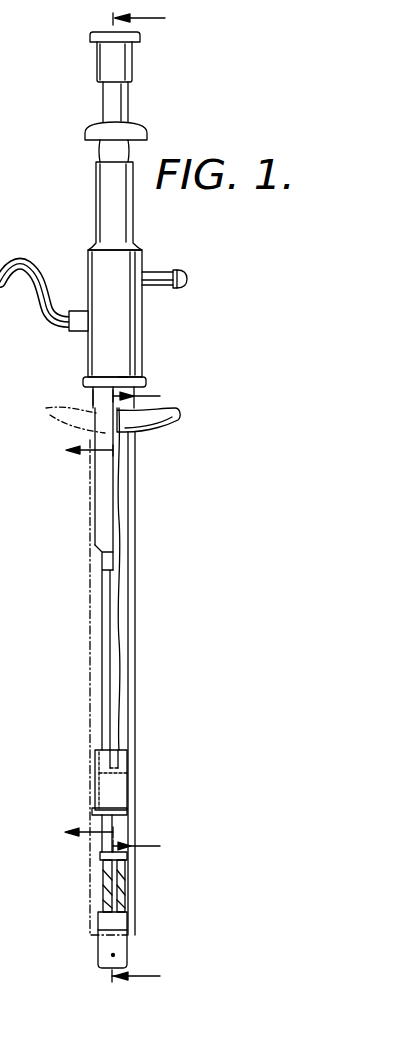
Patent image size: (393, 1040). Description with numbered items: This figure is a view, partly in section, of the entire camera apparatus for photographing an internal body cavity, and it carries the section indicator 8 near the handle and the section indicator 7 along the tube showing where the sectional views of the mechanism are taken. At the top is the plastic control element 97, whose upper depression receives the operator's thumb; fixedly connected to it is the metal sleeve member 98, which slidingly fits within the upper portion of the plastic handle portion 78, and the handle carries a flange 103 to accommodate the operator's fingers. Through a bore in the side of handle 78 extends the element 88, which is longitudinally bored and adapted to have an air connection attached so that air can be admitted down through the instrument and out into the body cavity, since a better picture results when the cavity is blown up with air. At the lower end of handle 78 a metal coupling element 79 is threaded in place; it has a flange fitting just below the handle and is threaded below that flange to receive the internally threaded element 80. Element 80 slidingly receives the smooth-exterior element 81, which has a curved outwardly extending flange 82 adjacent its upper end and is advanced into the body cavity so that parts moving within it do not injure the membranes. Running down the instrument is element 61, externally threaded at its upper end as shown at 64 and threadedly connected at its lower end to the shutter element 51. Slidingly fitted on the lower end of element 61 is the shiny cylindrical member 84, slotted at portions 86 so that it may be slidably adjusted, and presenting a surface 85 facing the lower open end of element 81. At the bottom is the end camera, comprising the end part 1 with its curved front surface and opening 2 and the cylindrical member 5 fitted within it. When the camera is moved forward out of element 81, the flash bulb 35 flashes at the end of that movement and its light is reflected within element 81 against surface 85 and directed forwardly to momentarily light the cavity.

The end part 1 is at (98, 958).
The opening 2 is at (149, 915).
The cylindrical member 5 is at (122, 940).
The section line 7- 7 is at (78, 685).
The section line 8- 8 is at (151, 204).
The flash bulb 35 is at (120, 882).
The shutter element 51 is at (108, 895).
The element 61 is at (113, 822).
The external thread 64 is at (108, 560).
The handle portion 78 is at (93, 268).
The metal coupling element 79 is at (123, 377).
The element 80 is at (90, 396).
The element 81 is at (125, 612).
The curved outwardly extending flange 82 is at (163, 422).
The cylindrical member 84 is at (108, 784).
The surface 85 is at (108, 808).
The slotted portions 86 is at (110, 752).
The element 88 is at (188, 274).
The control element 97 is at (98, 37).
The metal sleeve member 98 is at (113, 95).
The flange 103 is at (100, 130).